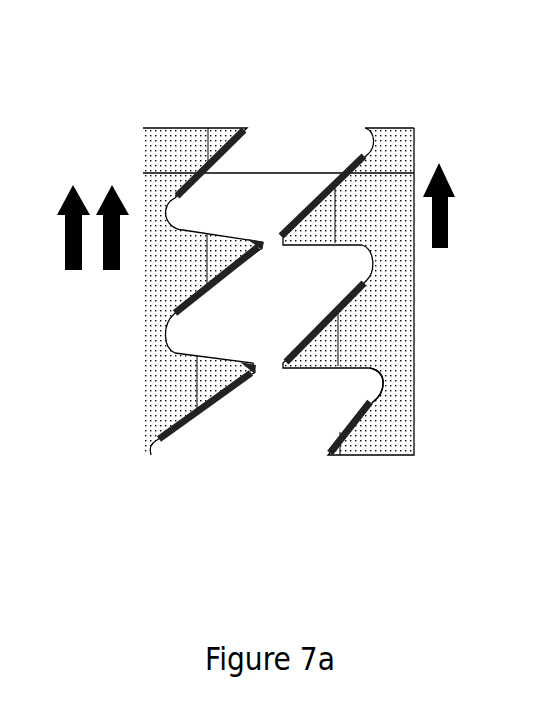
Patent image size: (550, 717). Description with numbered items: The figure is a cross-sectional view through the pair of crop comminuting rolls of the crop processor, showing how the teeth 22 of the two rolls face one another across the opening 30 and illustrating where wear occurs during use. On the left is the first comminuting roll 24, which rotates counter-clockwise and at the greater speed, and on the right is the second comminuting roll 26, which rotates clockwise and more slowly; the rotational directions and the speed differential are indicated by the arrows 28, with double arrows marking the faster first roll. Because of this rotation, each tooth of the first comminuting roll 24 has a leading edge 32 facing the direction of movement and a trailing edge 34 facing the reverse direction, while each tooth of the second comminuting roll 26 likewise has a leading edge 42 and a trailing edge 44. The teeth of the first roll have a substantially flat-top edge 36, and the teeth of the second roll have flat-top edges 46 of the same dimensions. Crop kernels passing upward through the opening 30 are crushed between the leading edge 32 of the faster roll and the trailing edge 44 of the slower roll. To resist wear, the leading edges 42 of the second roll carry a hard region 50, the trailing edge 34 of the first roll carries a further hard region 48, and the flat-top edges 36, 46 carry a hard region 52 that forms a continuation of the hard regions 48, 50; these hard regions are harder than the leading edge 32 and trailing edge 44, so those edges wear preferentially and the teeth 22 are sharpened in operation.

The teeth 22 is at (217, 128).
The first comminuting roll 24 is at (182, 128).
The second comminuting roll 26 is at (375, 444).
The arrows 28 is at (112, 272).
The opening 30 is at (285, 85).
The leading edge 32 is at (200, 230).
The trailing edge 34 is at (192, 306).
The flat-top edge 36 is at (263, 246).
The leading edge 42 is at (337, 175).
The trailing edge 44 is at (372, 398).
The flat-top edge 46 is at (287, 362).
The hard region 48 is at (208, 408).
The hard region 50 is at (345, 436).
The hard region 52 is at (261, 241).